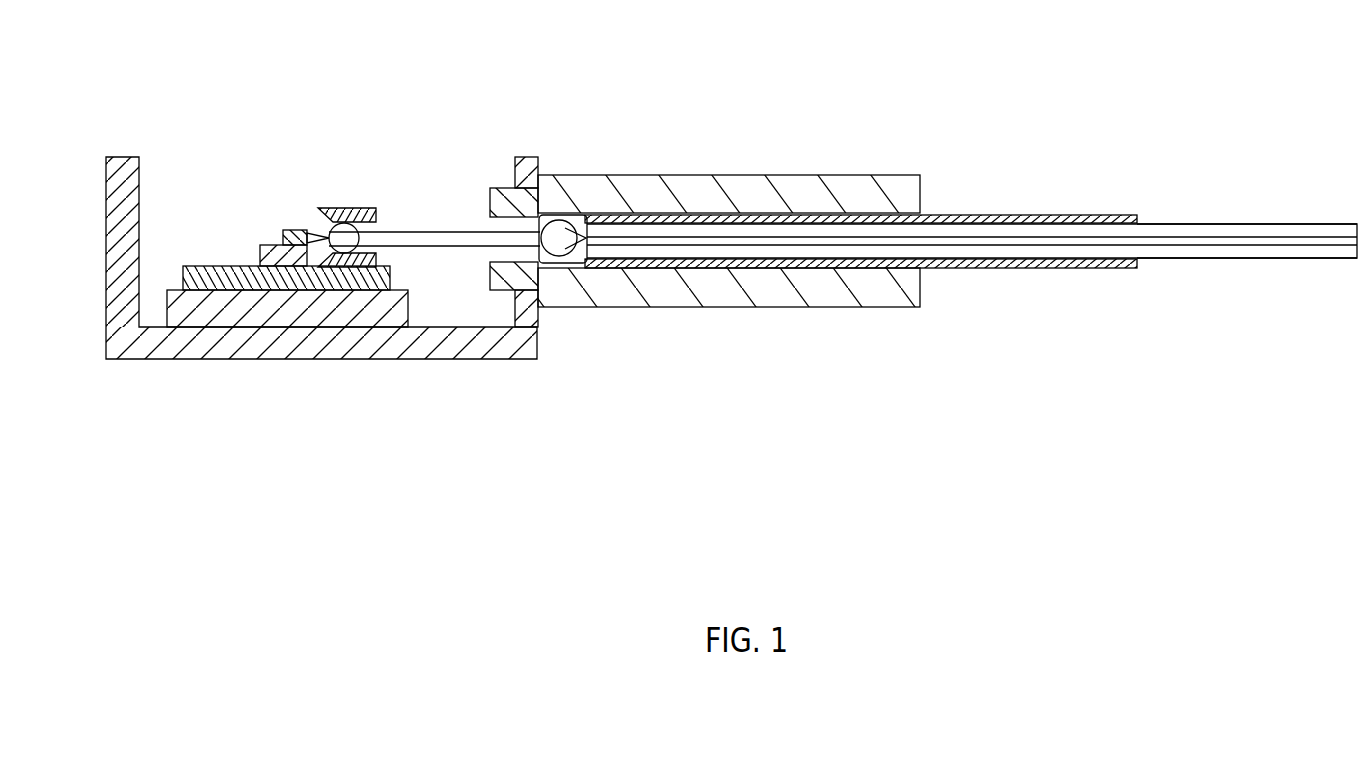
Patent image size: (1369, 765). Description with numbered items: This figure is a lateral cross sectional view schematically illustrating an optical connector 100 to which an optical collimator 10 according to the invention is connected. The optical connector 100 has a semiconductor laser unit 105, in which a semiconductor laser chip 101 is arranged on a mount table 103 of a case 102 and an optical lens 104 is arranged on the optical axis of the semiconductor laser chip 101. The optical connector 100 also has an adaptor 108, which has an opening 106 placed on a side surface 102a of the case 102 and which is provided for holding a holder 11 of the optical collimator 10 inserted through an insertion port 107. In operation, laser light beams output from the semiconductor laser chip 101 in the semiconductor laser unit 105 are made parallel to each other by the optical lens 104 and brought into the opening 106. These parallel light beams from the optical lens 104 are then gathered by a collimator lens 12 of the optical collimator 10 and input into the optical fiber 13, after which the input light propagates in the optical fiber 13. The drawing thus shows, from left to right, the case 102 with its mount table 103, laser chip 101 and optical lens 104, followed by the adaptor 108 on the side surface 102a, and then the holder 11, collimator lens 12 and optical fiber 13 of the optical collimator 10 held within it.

The optical connector 100 is at (169, 104).
The case 102 is at (106, 203).
The side surface 102a is at (538, 330).
The semiconductor laser unit 105 is at (211, 360).
The mount table 103 is at (260, 246).
The semiconductor laser chip 101 is at (297, 229).
The optical lens 104 is at (347, 208).
The opening 106 is at (494, 222).
The collimator lens 12 is at (559, 214).
The adaptor 108 is at (748, 175).
The insertion port 107 is at (945, 189).
The holder 11 is at (1000, 270).
The optical fiber 13 is at (1236, 225).
The optical collimator 10 is at (1059, 174).